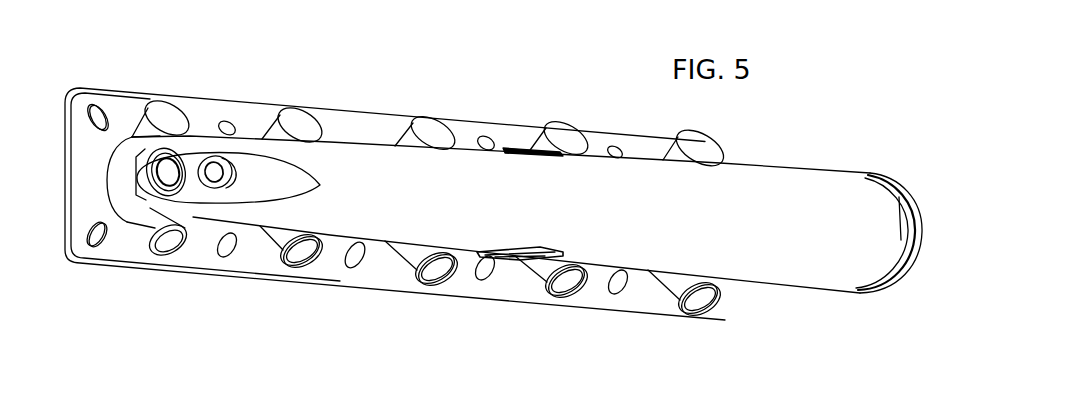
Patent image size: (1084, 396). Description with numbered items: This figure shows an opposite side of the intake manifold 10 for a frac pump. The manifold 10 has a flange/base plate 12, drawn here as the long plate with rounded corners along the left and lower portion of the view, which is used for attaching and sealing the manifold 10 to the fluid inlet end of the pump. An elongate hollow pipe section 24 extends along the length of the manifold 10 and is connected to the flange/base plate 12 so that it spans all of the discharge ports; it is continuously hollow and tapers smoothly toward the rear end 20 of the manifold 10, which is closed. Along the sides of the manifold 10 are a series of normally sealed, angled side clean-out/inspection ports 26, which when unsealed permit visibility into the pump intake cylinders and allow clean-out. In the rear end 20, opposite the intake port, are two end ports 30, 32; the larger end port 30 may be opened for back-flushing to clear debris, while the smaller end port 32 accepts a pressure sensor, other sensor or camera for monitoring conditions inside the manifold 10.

The intake manifold 10 is at (833, 267).
The flange/base plate 12 is at (202, 266).
The rear end 20 is at (120, 188).
The elongate hollow pipe section 24 is at (643, 212).
The side clean-out/inspection ports 26 is at (420, 273).
The end port 30 is at (170, 175).
The end port 32 is at (228, 168).